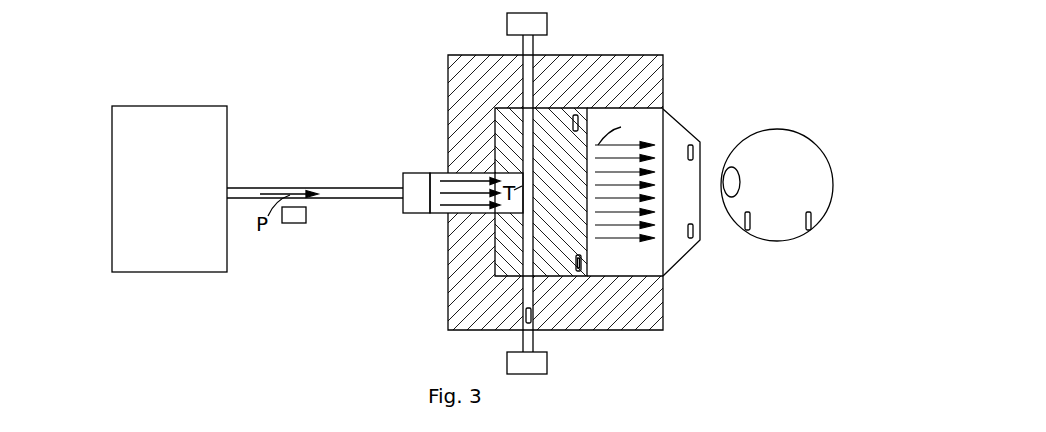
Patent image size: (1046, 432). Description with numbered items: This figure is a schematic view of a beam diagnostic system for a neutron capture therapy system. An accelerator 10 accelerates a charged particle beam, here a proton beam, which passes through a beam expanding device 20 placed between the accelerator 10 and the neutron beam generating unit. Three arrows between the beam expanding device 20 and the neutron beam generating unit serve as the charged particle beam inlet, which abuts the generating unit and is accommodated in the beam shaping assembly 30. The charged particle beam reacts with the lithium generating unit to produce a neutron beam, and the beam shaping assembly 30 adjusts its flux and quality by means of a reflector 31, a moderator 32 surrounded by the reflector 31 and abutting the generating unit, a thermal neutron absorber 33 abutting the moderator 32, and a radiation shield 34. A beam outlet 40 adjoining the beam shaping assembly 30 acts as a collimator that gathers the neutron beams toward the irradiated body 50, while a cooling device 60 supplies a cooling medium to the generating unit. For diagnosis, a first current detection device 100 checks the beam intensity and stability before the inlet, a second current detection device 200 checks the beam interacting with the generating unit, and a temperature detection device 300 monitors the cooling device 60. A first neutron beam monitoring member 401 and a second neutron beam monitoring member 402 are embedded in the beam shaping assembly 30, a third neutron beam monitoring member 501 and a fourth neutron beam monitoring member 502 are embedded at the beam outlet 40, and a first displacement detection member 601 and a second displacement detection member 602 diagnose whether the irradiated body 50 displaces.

The accelerator 10 is at (130, 242).
The beam expanding device 20 is at (403, 206).
The beam shaping assembly 30 is at (434, 120).
The reflector 31 is at (460, 65).
The moderator 32 is at (512, 262).
The thermal neutron absorber 33 is at (582, 258).
The radiation shield 34 is at (663, 84).
The beam outlet 40 is at (667, 247).
The irradiated body 50 is at (765, 233).
The cooling device 60 is at (506, 24).
The first current detection device 100 is at (284, 222).
The second current detection device 200 is at (496, 222).
The temperature detection device 300 is at (524, 322).
The first neutron beam monitoring member 401 is at (578, 272).
The second neutron beam monitoring member 402 is at (577, 115).
The third neutron beam monitoring member 501 is at (691, 238).
The fourth neutron beam monitoring member 502 is at (690, 145).
The first displacement detection member 601 is at (747, 231).
The second displacement detection member 602 is at (810, 230).